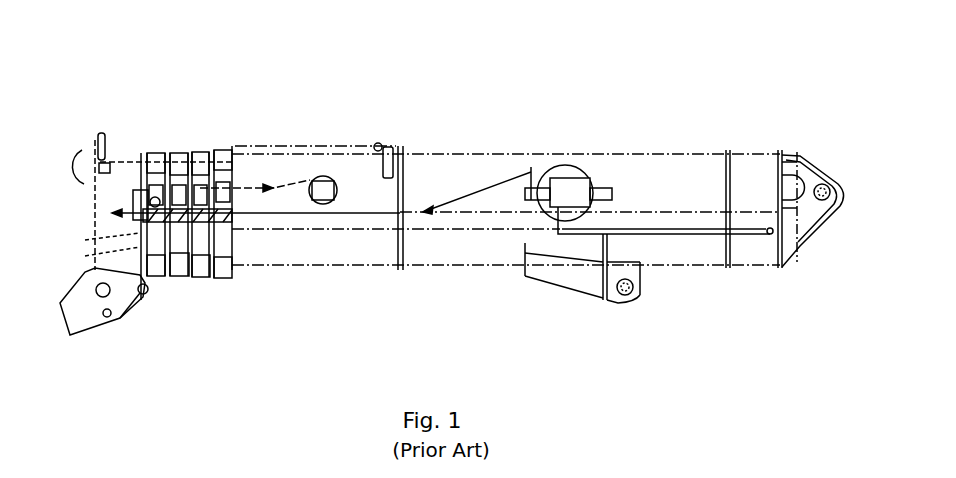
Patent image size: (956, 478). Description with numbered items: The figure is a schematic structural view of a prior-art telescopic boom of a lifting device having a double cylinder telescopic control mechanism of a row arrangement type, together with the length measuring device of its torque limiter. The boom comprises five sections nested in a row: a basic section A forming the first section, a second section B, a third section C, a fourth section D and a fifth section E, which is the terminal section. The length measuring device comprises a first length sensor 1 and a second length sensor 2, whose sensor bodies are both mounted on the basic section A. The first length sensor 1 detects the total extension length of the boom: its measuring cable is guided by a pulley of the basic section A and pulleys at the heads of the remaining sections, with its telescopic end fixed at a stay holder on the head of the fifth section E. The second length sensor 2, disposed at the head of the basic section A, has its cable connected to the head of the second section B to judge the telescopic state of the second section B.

The first length sensor 1 is at (585, 177).
The second length sensor 2 is at (325, 176).
The basic section A is at (240, 180).
The second section B is at (205, 170).
The third section C is at (185, 165).
The fourth section D is at (150, 158).
The fifth section E is at (92, 155).